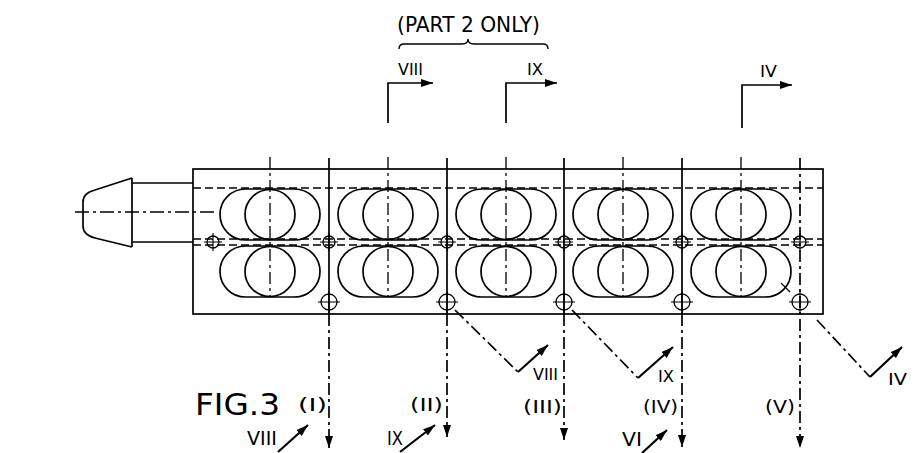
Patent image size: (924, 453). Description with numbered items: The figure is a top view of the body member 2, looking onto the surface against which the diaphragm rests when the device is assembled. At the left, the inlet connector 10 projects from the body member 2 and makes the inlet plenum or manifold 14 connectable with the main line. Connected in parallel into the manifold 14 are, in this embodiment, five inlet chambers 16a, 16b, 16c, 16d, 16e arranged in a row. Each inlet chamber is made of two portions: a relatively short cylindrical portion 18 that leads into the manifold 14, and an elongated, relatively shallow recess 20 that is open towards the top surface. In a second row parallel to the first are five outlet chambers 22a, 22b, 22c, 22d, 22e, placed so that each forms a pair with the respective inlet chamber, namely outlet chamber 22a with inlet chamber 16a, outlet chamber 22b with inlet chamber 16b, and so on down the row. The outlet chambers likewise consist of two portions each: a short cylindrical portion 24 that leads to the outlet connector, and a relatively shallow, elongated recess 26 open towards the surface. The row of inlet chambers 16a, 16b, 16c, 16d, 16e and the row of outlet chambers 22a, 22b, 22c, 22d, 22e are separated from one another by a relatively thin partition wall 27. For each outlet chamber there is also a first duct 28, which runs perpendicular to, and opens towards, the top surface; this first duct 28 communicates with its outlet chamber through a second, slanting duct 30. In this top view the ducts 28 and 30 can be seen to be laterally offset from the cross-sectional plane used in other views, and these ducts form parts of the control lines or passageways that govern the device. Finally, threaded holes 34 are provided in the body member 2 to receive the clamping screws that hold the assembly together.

The body member 2 is at (205, 178).
The inlet connector 10 is at (160, 198).
The inlet plenum or manifold 14 is at (220, 188).
The inlet chamber 16a is at (282, 185).
The inlet chamber 16b is at (386, 186).
The inlet chamber 16c is at (511, 187).
The inlet chamber 16d is at (631, 186).
The inlet chamber 16e is at (746, 187).
The cylindrical portion 18 is at (247, 211).
The recess 20 is at (364, 193).
The outlet chamber 22a is at (242, 295).
The outlet chamber 22b is at (393, 298).
The outlet chamber 22c is at (511, 298).
The outlet chamber 22d is at (628, 298).
The outlet chamber 22e is at (747, 298).
The cylindrical portion 24 is at (247, 270).
The recess 26 is at (226, 274).
The partition wall 27 is at (642, 239).
The first duct 28 is at (806, 296).
The second duct 30 is at (788, 289).
The threaded holes 34 is at (206, 245).